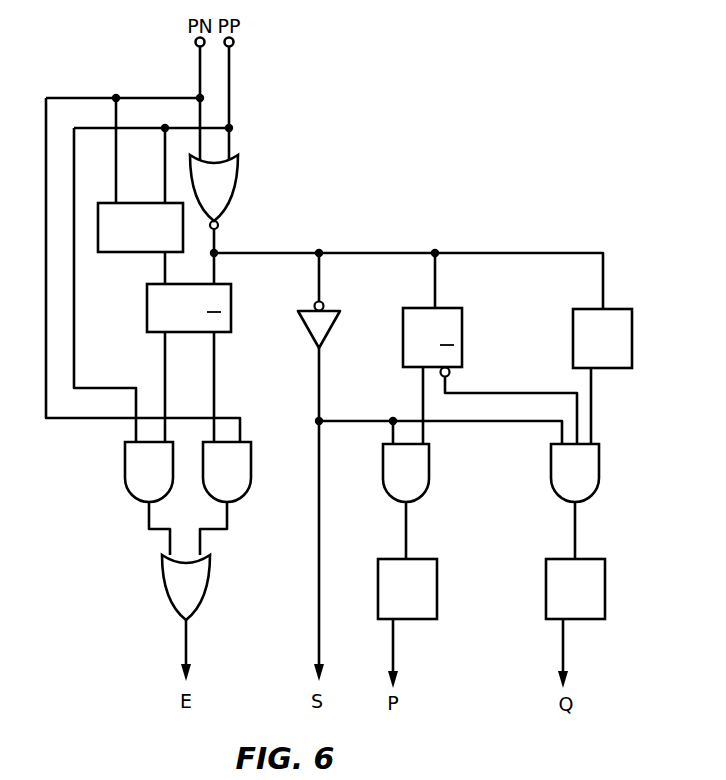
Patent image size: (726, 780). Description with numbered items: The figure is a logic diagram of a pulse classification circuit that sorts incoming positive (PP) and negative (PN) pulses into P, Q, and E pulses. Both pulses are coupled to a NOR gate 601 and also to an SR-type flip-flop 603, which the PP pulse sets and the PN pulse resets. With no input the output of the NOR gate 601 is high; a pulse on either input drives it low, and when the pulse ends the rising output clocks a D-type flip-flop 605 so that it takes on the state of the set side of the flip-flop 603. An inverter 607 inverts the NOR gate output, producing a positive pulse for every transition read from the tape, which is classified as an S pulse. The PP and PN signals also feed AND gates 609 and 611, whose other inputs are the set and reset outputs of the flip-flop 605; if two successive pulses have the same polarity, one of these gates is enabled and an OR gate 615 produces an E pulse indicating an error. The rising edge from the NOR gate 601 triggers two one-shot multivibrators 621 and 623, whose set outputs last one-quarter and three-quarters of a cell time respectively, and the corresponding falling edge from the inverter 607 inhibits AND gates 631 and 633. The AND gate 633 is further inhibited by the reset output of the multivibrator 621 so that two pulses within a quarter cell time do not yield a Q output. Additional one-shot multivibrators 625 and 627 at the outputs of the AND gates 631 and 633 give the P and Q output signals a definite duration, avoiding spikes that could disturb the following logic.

The NOR gate 601 is at (238, 190).
The SR-type flip-flop 603 is at (139, 253).
The D-type flip-flop 605 is at (147, 332).
The inverter 607 is at (305, 330).
The AND gate 609 is at (125, 470).
The AND gate 611 is at (251, 478).
The OR gate 615 is at (212, 598).
The one-shot multivibrator 621 is at (463, 325).
The one-shot multivibrator 623 is at (633, 330).
The one-shot multivibrator 625 is at (437, 600).
The one-shot multivibrator 627 is at (605, 600).
The AND gate 631 is at (430, 472).
The AND gate 633 is at (599, 480).